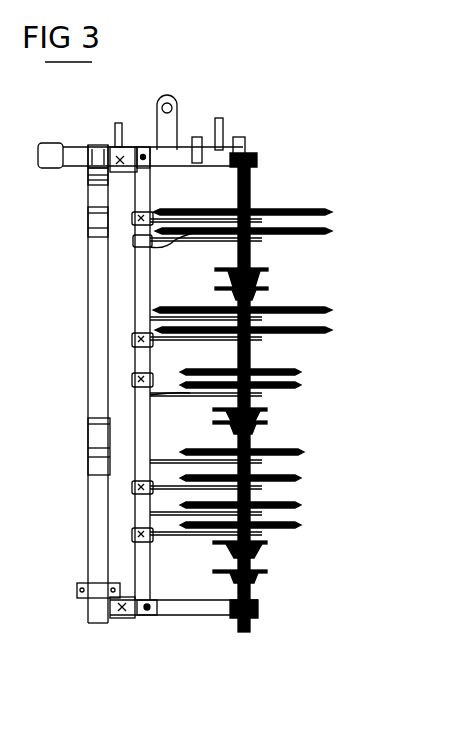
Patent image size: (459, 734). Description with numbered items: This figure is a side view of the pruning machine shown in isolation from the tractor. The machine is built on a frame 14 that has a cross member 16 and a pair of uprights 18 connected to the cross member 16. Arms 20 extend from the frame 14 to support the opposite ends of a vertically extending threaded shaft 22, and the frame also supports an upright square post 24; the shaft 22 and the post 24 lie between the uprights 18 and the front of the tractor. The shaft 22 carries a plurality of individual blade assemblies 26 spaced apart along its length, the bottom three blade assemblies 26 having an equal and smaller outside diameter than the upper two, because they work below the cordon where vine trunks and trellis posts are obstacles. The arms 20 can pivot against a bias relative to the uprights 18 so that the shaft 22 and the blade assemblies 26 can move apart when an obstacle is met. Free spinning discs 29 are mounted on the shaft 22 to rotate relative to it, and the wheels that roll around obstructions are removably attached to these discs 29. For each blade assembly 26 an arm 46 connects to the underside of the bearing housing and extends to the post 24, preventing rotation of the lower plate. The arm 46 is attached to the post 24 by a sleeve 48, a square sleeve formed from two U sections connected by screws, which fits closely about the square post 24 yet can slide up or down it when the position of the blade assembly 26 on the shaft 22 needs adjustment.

The frame 14 is at (88, 545).
The cross member 16 is at (100, 150).
The uprights 18 is at (98, 303).
The arms 20 is at (180, 157).
The threaded shaft 22 is at (255, 186).
The upright square post 24 is at (143, 263).
The blade assemblies 26 is at (293, 213).
The free spinning discs 29 is at (260, 423).
The arm 46 is at (147, 250).
The sleeve 48 is at (140, 342).